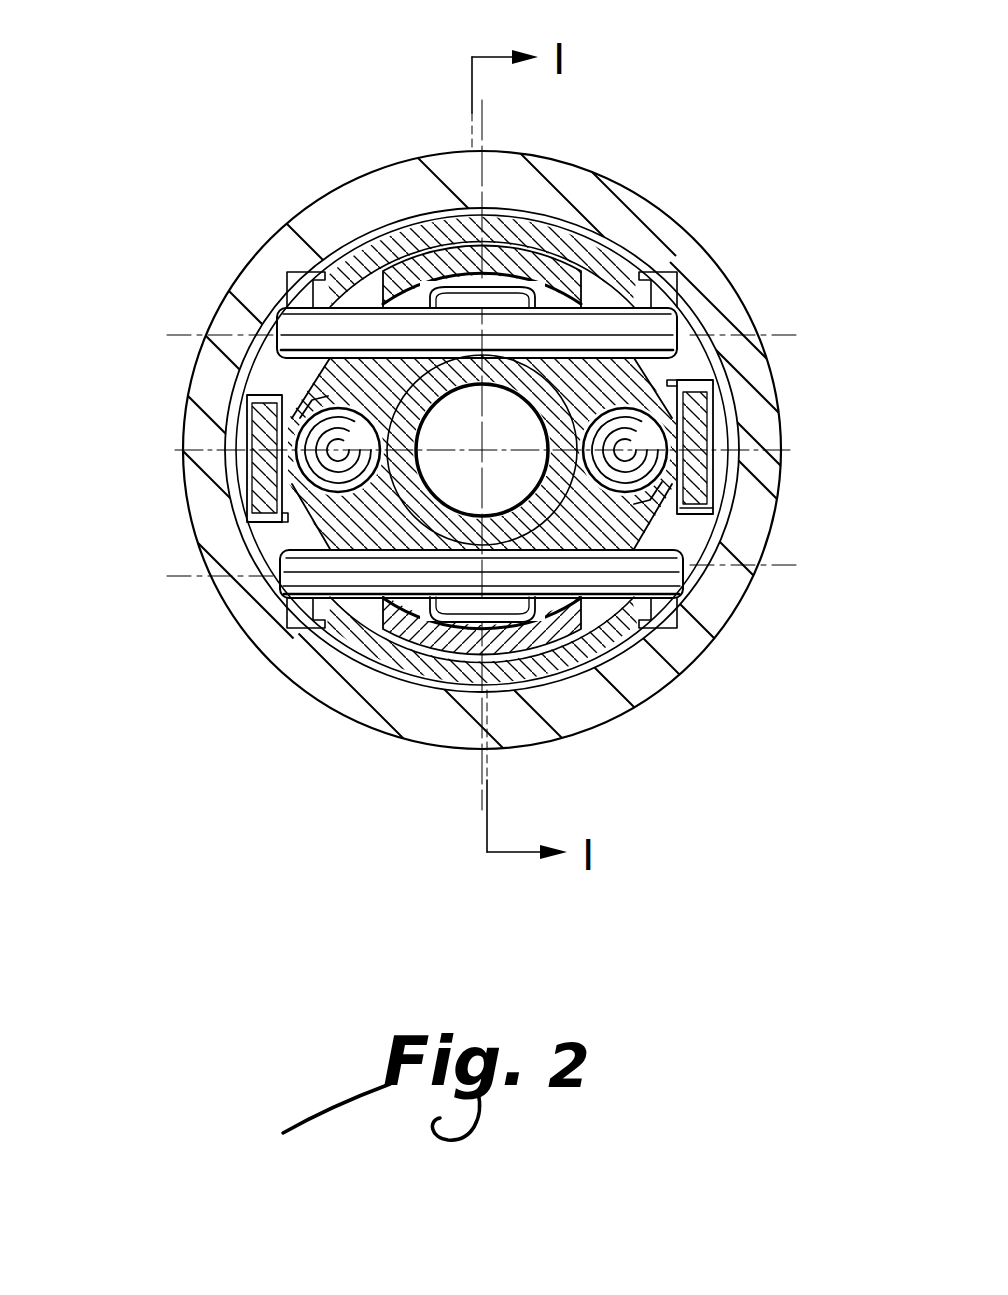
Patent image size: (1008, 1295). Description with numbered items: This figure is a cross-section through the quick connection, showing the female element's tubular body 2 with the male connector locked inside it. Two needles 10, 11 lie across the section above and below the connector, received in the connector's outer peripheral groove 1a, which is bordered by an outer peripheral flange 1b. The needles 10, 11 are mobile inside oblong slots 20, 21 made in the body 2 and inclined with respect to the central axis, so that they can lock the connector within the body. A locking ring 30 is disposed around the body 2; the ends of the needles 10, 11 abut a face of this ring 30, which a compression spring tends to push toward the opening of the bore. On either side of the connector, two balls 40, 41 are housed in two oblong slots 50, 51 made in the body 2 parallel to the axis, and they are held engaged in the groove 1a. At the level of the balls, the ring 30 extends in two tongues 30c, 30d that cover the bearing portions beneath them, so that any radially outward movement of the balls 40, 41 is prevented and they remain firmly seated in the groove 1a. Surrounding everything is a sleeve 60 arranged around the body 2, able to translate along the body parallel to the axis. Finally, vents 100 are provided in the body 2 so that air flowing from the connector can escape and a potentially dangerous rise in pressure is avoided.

The outer peripheral groove 1a is at (385, 395).
The outer peripheral flange 1b is at (520, 520).
The tubular body 2 is at (590, 393).
The needle 10 is at (650, 333).
The needle 11 is at (307, 570).
The oblong slot 20 is at (590, 296).
The oblong slot 21 is at (640, 627).
The locking ring 30 is at (378, 637).
The tongue 30c is at (245, 419).
The tongue 30d is at (715, 432).
The ball 40 is at (300, 449).
The ball 41 is at (665, 452).
The oblong slot 50 is at (327, 405).
The oblong slot 51 is at (626, 498).
The sleeve 60 is at (200, 488).
The vent 100 is at (443, 283).